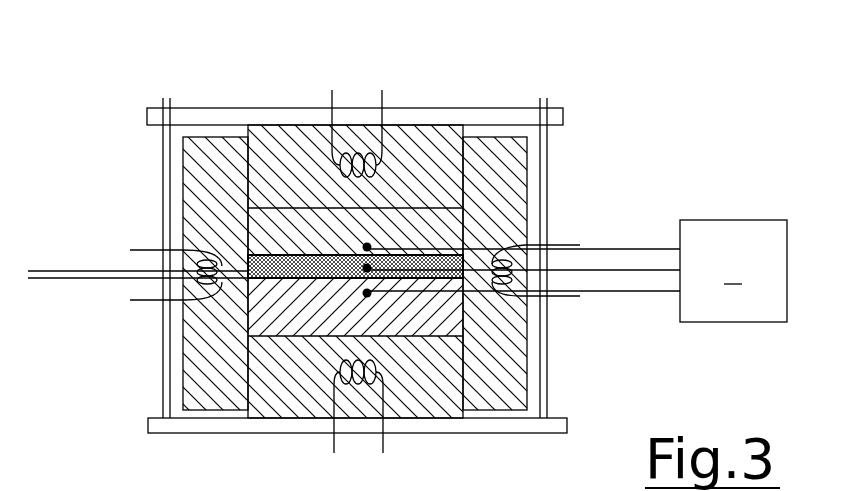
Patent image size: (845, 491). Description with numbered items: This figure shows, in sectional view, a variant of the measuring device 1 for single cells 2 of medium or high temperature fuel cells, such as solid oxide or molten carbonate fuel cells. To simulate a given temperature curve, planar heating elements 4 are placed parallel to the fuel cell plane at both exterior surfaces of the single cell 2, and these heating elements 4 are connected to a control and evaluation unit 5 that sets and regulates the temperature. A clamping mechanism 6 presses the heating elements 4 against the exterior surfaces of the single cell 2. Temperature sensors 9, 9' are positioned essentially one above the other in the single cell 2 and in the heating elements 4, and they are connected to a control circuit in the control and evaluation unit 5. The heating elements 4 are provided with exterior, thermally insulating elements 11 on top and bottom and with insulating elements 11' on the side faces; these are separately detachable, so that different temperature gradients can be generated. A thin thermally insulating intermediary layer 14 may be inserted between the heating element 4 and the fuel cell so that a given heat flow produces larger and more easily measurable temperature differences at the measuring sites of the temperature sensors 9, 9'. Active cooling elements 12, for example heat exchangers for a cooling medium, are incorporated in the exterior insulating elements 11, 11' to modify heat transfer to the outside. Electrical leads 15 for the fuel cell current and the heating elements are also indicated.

The measuring device 1 is at (358, 94).
The single cell 2 is at (295, 282).
The heating elements 4 is at (313, 225).
The control and evaluation unit 5 is at (733, 271).
The clamping mechanism 6 is at (520, 435).
The temperature sensor 9 is at (491, 152).
The temperature sensors 9' is at (522, 271).
The thermally insulating elements 11 is at (365, 271).
The insulating elements 11' is at (364, 273).
The active cooling elements 12 is at (360, 168).
The thermally insulating intermediary layer 14 is at (288, 255).
The electrical leads 15 is at (138, 309).